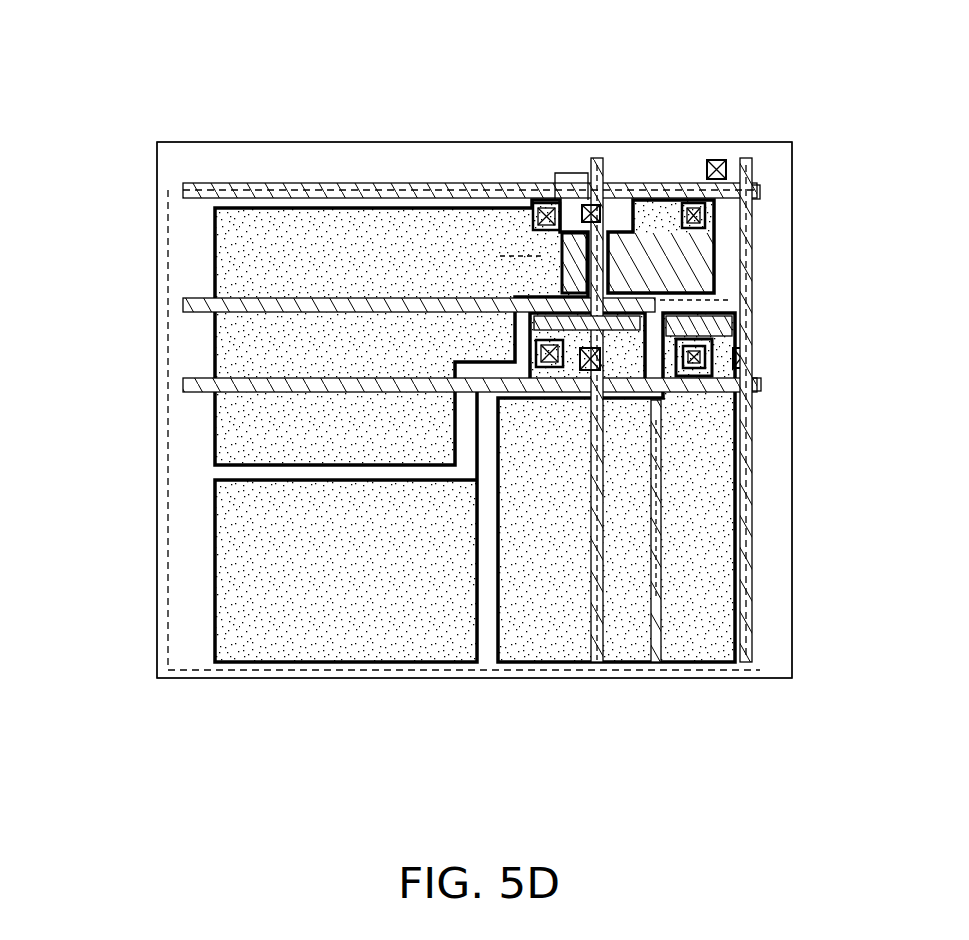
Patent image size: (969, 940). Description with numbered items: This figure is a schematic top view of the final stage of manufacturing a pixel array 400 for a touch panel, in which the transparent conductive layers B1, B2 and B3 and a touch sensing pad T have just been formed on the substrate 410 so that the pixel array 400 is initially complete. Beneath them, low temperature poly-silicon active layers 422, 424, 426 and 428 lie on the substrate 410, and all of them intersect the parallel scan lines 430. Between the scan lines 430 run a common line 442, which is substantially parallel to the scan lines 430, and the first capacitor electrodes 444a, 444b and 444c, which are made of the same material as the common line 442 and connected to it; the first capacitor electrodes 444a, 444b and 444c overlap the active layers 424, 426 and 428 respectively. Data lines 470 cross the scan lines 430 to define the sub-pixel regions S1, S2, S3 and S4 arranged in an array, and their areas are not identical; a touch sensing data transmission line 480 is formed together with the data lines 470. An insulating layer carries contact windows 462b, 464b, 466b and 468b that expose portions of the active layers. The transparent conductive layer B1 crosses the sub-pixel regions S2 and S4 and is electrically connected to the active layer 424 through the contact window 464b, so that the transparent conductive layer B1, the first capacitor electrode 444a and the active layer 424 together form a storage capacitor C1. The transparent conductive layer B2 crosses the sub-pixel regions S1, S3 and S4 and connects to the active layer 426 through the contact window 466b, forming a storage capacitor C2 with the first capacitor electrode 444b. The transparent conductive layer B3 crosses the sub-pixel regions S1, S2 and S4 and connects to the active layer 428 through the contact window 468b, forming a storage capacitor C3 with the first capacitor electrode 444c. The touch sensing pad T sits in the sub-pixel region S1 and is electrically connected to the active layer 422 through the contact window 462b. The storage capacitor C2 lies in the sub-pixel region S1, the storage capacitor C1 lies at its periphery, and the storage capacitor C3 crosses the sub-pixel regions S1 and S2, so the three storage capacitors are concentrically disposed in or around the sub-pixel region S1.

The pixel array 400 is at (159, 89).
The substrate 410 is at (178, 145).
The active layer 422 is at (760, 192).
The active layer 424 is at (591, 204).
The active layer 426 is at (718, 398).
The active layer 428 is at (590, 370).
The scan line 430 is at (762, 385).
The common line 442 is at (193, 304).
The first capacitor electrode 444a is at (612, 195).
The first capacitor electrode 444b is at (720, 322).
The first capacitor electrode 444c is at (620, 400).
The contact window 462b is at (697, 203).
The contact window 464b is at (547, 203).
The contact window 466b is at (694, 375).
The contact window 468b is at (548, 368).
The data line 470 is at (595, 597).
The touch sensing data transmission line 480 is at (748, 662).
The touch sensing pad T is at (652, 185).
The transparent conductive layer B1 is at (278, 230).
The transparent conductive layer B2 is at (712, 497).
The transparent conductive layer B3 is at (262, 635).
The sub-pixel region S1 is at (762, 216).
The sub-pixel region S2 is at (335, 188).
The sub-pixel region S3 is at (752, 560).
The sub-pixel region S4 is at (320, 672).
The storage capacitor C1 is at (543, 258).
The storage capacitor C2 is at (718, 298).
The storage capacitor C3 is at (657, 605).